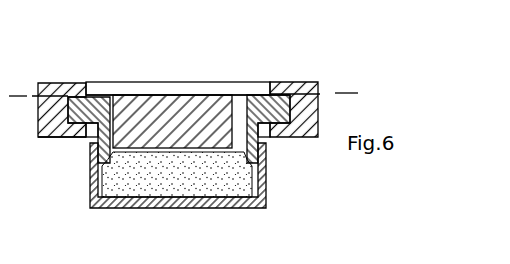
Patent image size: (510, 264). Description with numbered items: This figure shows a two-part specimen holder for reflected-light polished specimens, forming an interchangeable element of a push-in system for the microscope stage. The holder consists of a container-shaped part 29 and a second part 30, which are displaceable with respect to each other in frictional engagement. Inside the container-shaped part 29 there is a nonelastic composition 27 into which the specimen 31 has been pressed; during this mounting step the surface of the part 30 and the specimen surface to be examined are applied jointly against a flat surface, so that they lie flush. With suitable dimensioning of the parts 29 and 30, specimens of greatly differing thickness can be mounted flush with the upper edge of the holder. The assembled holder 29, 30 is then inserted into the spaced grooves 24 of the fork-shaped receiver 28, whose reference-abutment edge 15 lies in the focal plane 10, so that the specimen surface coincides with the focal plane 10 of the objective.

The focal plane 10 is at (345, 93).
The reference-abutment edge 15 is at (74, 99).
The groove 24 is at (66, 108).
The nonelastic composition 27 is at (131, 187).
The fork-shaped receiver 28 is at (48, 138).
The container-shaped part 29 is at (89, 188).
The holder part 30 is at (258, 95).
The specimen 31 is at (174, 106).